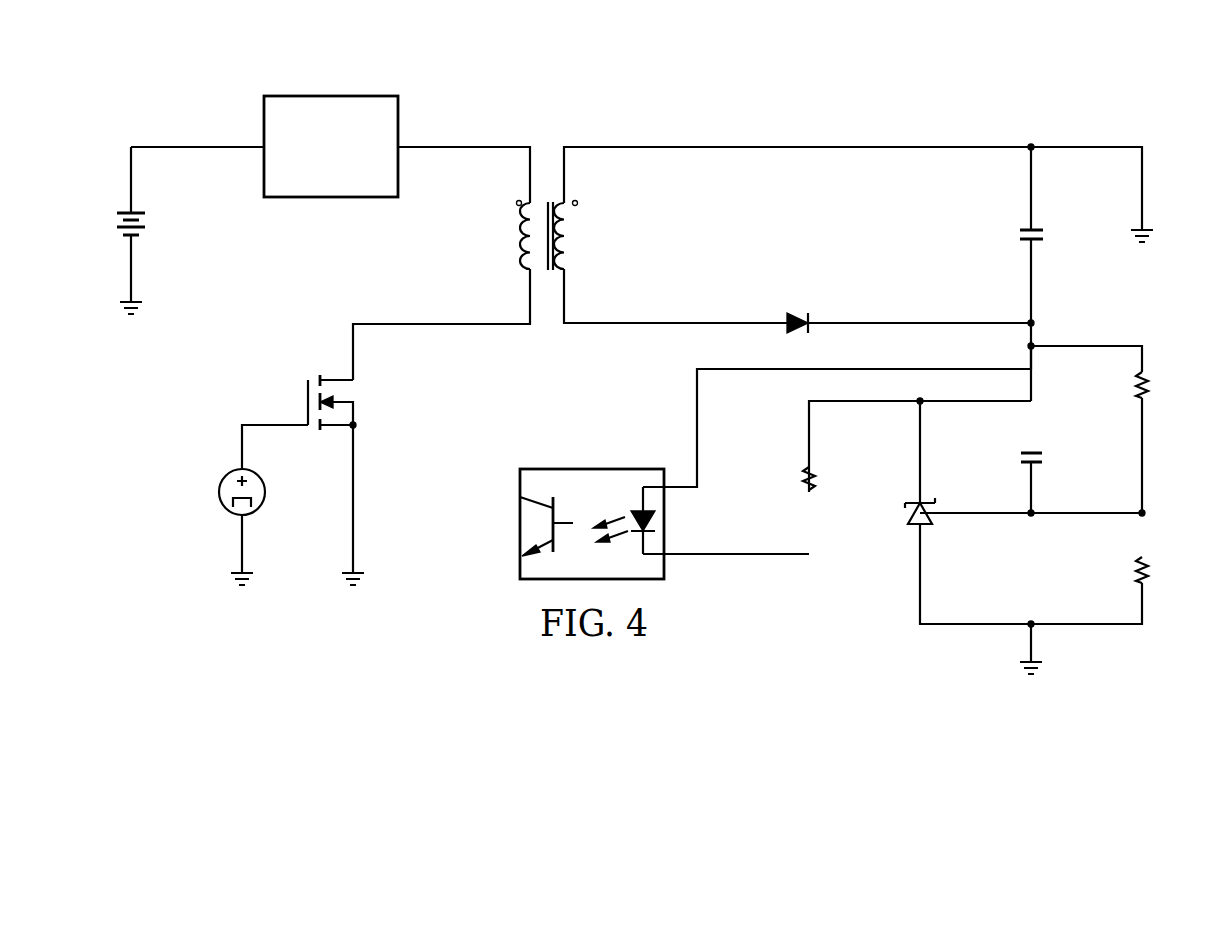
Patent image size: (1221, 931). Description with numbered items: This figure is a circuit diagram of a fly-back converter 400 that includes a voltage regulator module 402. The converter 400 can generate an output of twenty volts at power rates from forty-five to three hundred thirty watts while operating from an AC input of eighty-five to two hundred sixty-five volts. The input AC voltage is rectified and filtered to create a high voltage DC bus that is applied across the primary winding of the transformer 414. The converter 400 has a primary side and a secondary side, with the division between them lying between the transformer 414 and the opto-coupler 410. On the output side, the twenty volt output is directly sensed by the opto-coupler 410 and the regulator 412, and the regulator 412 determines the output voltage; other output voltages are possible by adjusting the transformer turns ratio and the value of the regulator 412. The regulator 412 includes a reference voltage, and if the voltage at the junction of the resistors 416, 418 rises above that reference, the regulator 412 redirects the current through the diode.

The fly-back converter 400 is at (860, 81).
The voltage regulator module 402 is at (330, 96).
The opto-coupler 410 is at (591, 469).
The regulator 412 is at (916, 528).
The transformer 414 is at (488, 216).
The resistor 416 is at (1147, 386).
The resistor 418 is at (1147, 570).